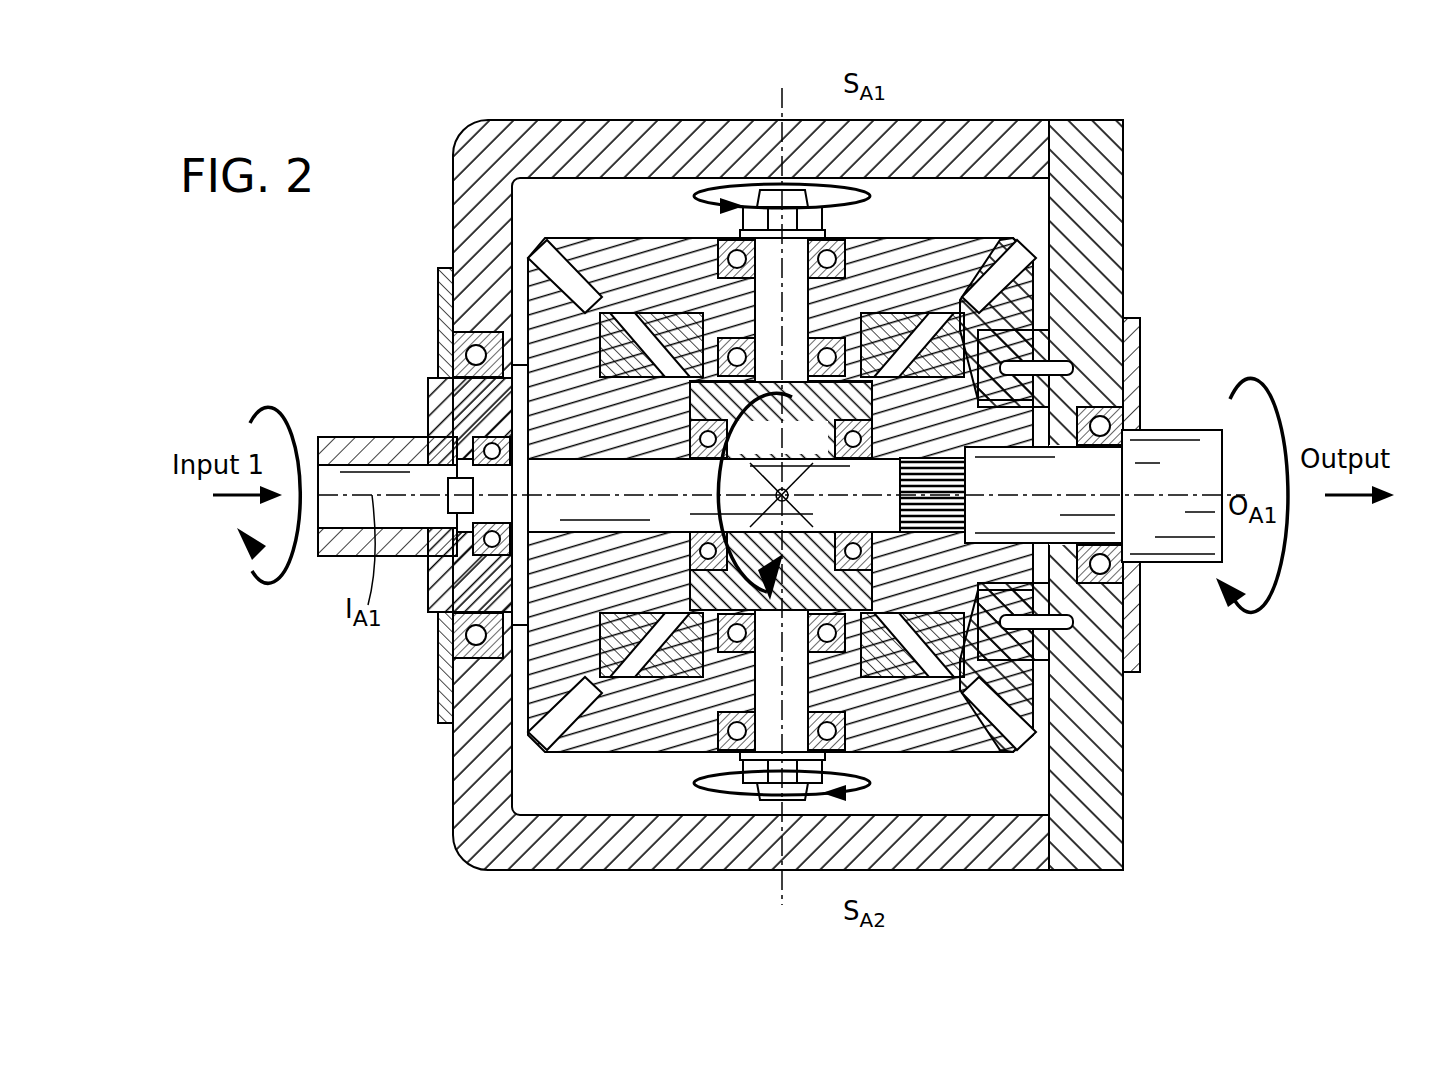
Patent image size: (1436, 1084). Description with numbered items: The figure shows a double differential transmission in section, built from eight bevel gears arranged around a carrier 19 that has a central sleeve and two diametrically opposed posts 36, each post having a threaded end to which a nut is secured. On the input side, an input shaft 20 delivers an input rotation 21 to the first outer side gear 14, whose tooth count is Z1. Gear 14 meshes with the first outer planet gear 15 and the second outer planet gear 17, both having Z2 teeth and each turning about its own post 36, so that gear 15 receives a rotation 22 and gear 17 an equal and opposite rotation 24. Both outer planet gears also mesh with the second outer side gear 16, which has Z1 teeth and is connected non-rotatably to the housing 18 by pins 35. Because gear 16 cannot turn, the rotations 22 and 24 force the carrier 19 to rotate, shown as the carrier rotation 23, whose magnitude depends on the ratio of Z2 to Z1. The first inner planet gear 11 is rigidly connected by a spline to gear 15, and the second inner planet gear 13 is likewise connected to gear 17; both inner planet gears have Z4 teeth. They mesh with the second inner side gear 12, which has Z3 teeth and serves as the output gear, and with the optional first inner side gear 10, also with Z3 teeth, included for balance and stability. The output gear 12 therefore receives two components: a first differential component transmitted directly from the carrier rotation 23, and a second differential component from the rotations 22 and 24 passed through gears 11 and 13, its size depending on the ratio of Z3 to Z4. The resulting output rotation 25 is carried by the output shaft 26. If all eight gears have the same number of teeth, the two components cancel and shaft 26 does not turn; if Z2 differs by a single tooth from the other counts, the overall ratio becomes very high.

The first inner side gear 10 is at (548, 657).
The first inner planet gear 11 is at (630, 300).
The second inner side gear 12 is at (1035, 300).
The second inner planet gear 13 is at (545, 712).
The first outer side gear 14 is at (540, 322).
The first outer planet gear 15 is at (668, 300).
The second outer side gear 16 is at (990, 675).
The second outer planet gear 17 is at (636, 740).
The housing 18 is at (1100, 790).
The carrier 19 is at (845, 400).
The input shaft 20 is at (352, 440).
The input rotation 21 is at (255, 515).
The rotation of first outer planet gear 22 is at (836, 199).
The carrier rotation 23 is at (778, 496).
The rotation of second outer planet gear 24 is at (841, 790).
The output rotation 25 is at (1281, 516).
The output shaft 26 is at (1188, 447).
The pins 35 is at (1067, 367).
The posts 36 is at (795, 300).
The number of teeth of gears 14 and 16 Z1 is at (545, 300).
The number of teeth of gears 15 and 17 Z2 is at (653, 265).
The number of teeth of gears 10 and 12 Z3 is at (968, 330).
The number of teeth of gears 11 and 13 Z4 is at (563, 315).